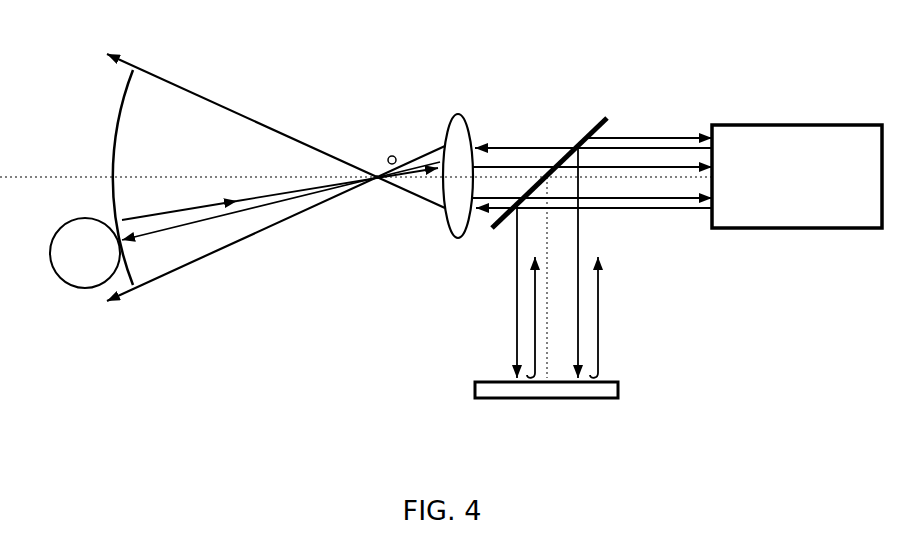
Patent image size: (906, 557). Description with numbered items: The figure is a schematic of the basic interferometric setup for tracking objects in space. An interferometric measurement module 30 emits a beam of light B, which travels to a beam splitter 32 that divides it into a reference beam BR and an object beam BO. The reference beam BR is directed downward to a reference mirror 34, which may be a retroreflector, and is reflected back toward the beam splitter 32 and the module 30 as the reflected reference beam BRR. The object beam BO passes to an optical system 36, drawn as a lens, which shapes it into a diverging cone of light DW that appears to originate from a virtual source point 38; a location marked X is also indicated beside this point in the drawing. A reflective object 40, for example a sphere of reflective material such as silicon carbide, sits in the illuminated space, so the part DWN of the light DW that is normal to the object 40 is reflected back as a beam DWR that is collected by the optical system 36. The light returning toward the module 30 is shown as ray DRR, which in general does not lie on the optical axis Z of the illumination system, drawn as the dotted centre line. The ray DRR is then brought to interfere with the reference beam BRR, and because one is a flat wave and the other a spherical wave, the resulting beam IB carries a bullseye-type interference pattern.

The interferometric measurement module 30 is at (817, 125).
The beam splitter 32 is at (607, 115).
The reference mirror 34 is at (475, 397).
The optical system 36 is at (455, 238).
The virtual source point 38 is at (373, 183).
The reflective object 40 is at (58, 263).
The rotation axis marker X is at (395, 153).
The optical axis Z is at (143, 177).
The diverging cone of light DW is at (117, 108).
The reflected beam DWR is at (142, 219).
The normal part of the light DWN is at (158, 233).
The returning ray DRR is at (518, 158).
The object beam BO is at (552, 137).
The interference beam IB is at (672, 167).
The beam of light B is at (670, 210).
The reference beam BR is at (510, 313).
The reflected reference beam BRR is at (600, 330).